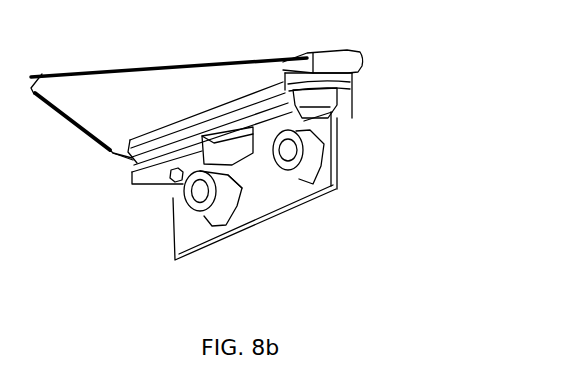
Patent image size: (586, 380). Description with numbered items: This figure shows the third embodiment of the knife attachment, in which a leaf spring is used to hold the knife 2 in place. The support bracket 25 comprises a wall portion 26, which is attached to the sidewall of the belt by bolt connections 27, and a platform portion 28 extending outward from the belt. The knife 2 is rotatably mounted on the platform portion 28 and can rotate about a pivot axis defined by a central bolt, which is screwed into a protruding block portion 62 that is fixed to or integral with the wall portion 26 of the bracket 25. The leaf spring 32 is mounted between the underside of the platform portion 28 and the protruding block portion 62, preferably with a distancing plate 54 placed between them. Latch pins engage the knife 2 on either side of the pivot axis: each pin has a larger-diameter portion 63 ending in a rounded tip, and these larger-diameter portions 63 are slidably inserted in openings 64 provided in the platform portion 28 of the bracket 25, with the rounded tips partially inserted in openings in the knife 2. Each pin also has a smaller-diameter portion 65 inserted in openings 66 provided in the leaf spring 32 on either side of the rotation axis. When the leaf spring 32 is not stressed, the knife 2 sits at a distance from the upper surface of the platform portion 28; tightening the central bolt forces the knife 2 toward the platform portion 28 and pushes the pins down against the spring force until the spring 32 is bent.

The knife 2 is at (82, 90).
The openings 64 is at (133, 160).
The leaf spring 32 is at (175, 160).
The distancing plate 54 is at (217, 118).
The larger-diameter portion 63 is at (287, 110).
The platform portion 28 is at (334, 81).
The smaller-diameter portion 65 is at (338, 120).
The bolt connections 27 is at (310, 140).
The wall portion 26 is at (336, 178).
The support bracket 25 is at (289, 214).
The protruding block portion 62 is at (238, 232).
The openings 66 is at (133, 162).